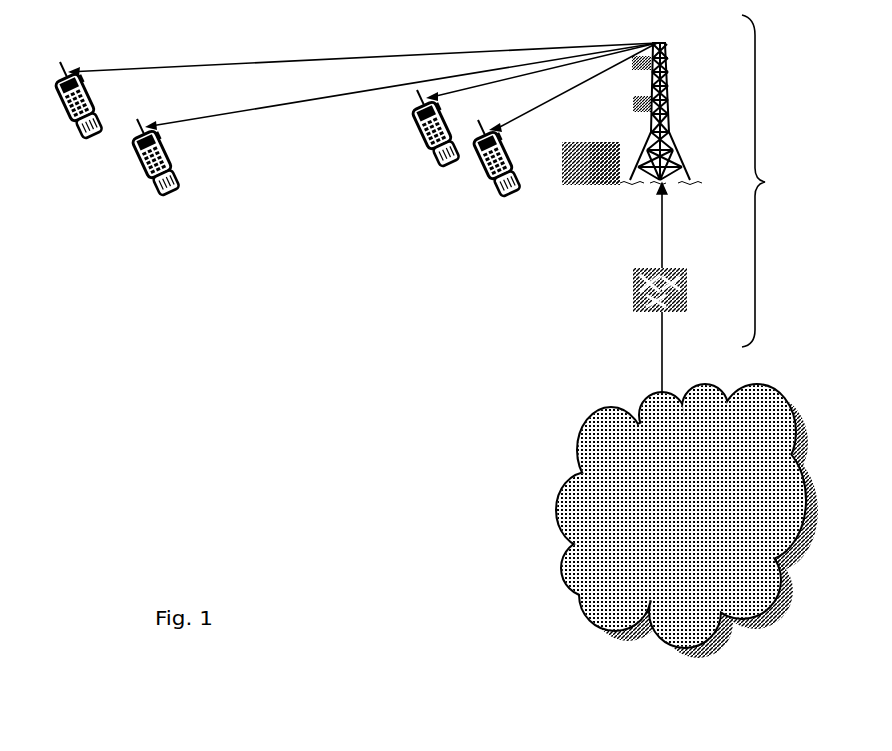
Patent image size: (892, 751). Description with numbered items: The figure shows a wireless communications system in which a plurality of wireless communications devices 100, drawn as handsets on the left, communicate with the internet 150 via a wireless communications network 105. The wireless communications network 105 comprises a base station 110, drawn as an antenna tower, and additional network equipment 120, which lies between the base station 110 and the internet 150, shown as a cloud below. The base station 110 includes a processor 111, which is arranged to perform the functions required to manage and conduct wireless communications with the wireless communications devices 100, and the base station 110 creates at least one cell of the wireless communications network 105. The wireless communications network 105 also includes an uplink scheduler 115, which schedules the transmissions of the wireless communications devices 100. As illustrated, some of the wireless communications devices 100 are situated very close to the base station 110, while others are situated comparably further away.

The wireless communications devices 100 is at (530, 213).
The wireless communications network 105 is at (776, 181).
The base station 110 is at (661, 104).
The processor 111 is at (602, 176).
The uplink scheduler 115 is at (579, 174).
The additional network equipment 120 is at (679, 303).
The internet 150 is at (687, 521).